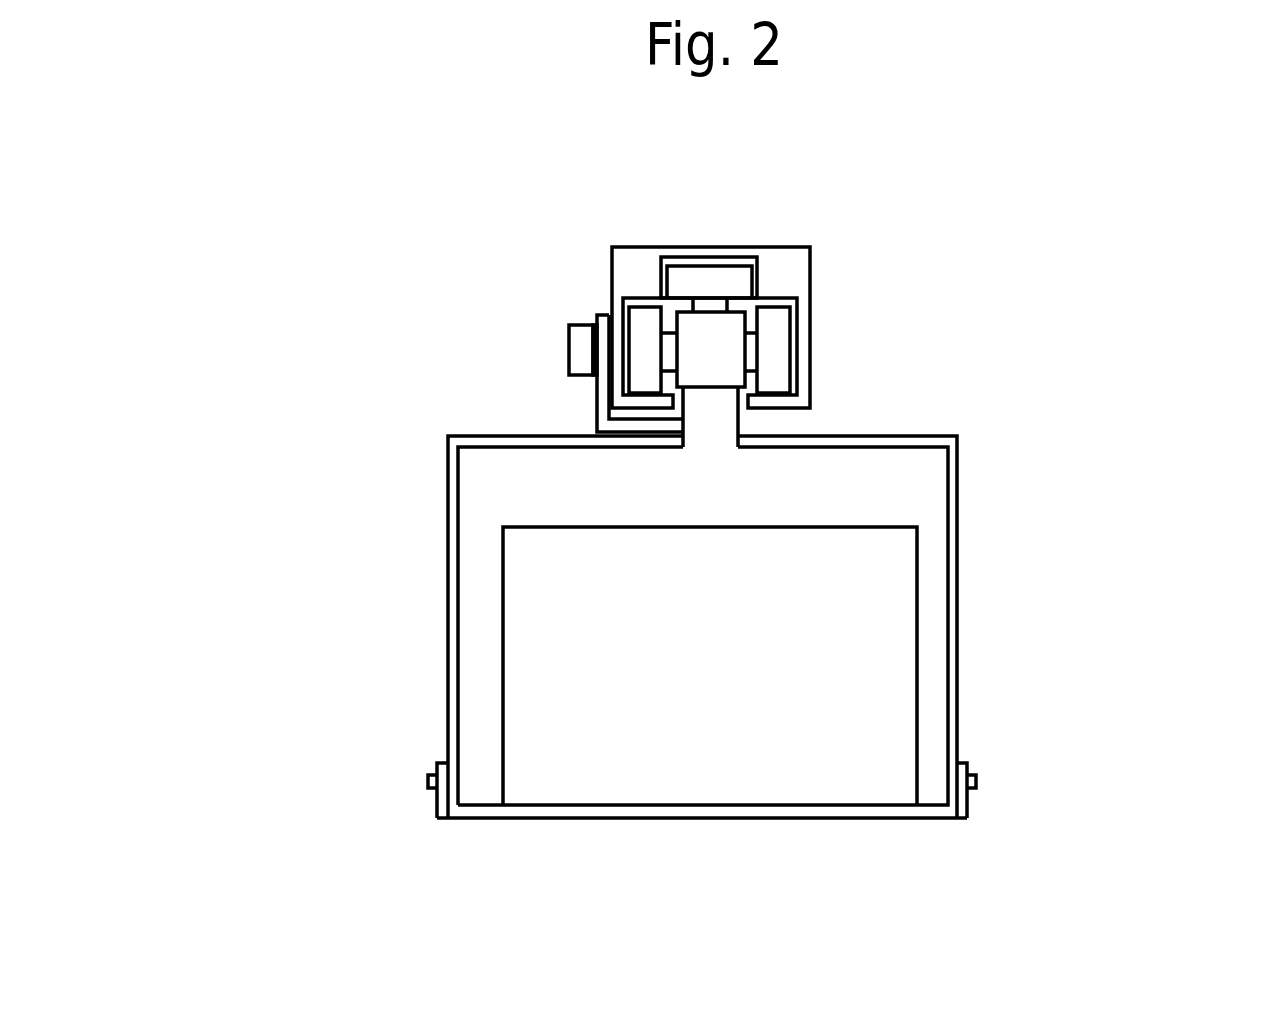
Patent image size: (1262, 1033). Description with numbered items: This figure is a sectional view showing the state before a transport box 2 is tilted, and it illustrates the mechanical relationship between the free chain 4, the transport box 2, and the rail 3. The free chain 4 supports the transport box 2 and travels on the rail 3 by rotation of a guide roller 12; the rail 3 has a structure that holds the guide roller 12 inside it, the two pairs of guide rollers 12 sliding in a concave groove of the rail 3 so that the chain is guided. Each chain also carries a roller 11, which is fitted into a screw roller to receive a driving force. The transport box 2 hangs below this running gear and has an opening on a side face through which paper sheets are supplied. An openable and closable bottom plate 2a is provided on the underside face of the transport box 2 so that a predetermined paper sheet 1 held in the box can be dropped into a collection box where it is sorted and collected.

The paper sheet 1 is at (917, 592).
The transport box 2 is at (448, 568).
The bottom plate 2a is at (755, 820).
The rail 3 is at (811, 303).
The free chain 4 is at (632, 319).
The roller 11 is at (568, 352).
The guide roller 12 is at (775, 372).